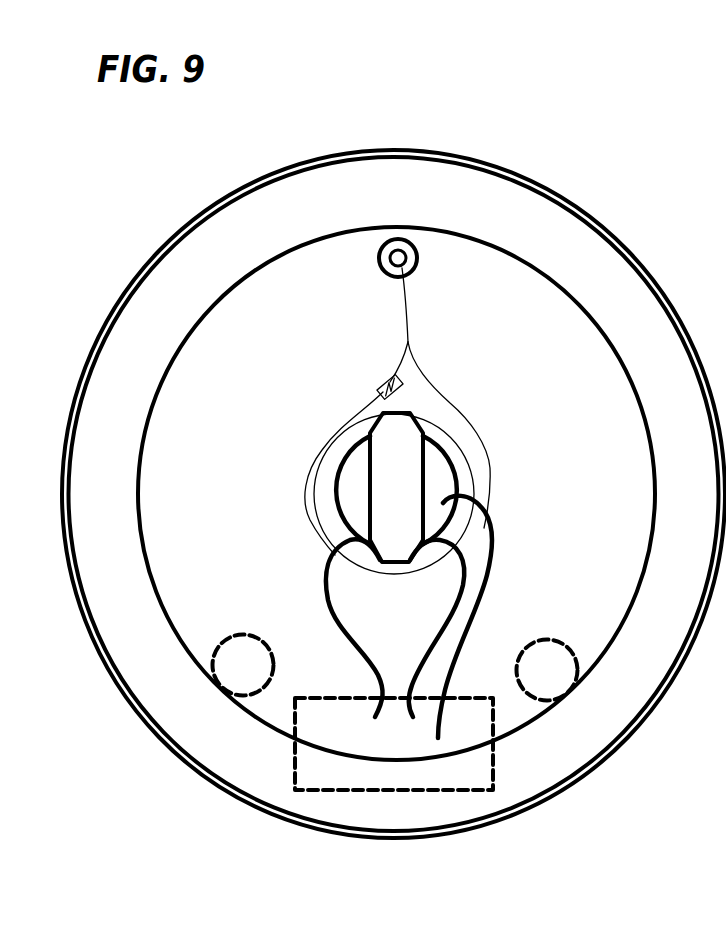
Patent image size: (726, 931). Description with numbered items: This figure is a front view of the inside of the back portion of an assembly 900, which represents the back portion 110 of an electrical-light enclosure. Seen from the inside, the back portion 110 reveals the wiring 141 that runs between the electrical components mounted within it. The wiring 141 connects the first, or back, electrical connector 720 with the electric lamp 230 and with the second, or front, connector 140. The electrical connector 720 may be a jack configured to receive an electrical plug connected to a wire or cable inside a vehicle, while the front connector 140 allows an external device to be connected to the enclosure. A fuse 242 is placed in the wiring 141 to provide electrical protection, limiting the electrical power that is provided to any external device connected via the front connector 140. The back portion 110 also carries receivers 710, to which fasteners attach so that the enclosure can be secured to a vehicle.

The assembly 900 is at (524, 157).
The back portion 110 is at (644, 258).
The front connector 140 is at (385, 273).
The fuse 242 is at (384, 377).
The electric lamp 230 is at (424, 445).
The wiring 141 is at (431, 384).
The receivers 710 is at (273, 670).
The electrical connector 720 is at (295, 772).